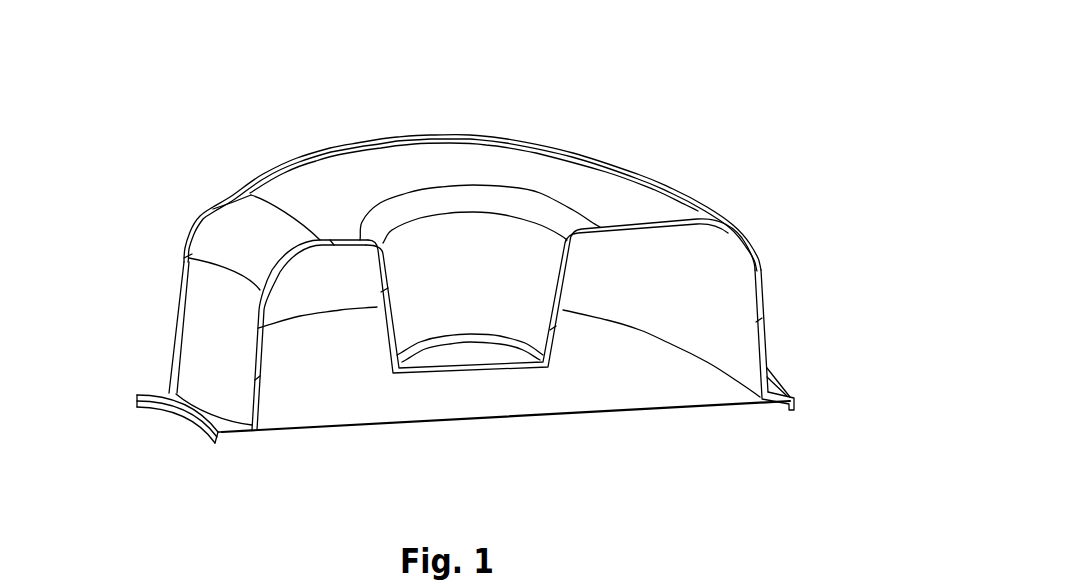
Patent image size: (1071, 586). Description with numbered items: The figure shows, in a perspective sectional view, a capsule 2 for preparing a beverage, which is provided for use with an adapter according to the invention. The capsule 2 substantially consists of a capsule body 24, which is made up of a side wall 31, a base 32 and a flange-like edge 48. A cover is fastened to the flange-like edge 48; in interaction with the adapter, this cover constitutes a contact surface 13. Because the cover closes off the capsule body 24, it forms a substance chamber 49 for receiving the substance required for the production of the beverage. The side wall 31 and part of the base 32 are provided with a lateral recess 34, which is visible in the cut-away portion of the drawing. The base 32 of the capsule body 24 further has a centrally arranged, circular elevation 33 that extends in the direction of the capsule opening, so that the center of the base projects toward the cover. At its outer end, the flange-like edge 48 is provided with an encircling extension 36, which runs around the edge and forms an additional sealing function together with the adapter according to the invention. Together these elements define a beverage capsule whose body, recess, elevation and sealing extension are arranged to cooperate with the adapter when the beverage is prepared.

The capsule 2 is at (792, 124).
The contact surface 13 is at (361, 430).
The capsule body 24 is at (751, 238).
The side wall 31 is at (762, 287).
The base 32 is at (613, 187).
The circular elevation 33 is at (455, 352).
The lateral recess 34 is at (212, 331).
The encircling extension 36 is at (795, 402).
The flange-like edge 48 is at (782, 381).
The substance chamber 49 is at (318, 386).